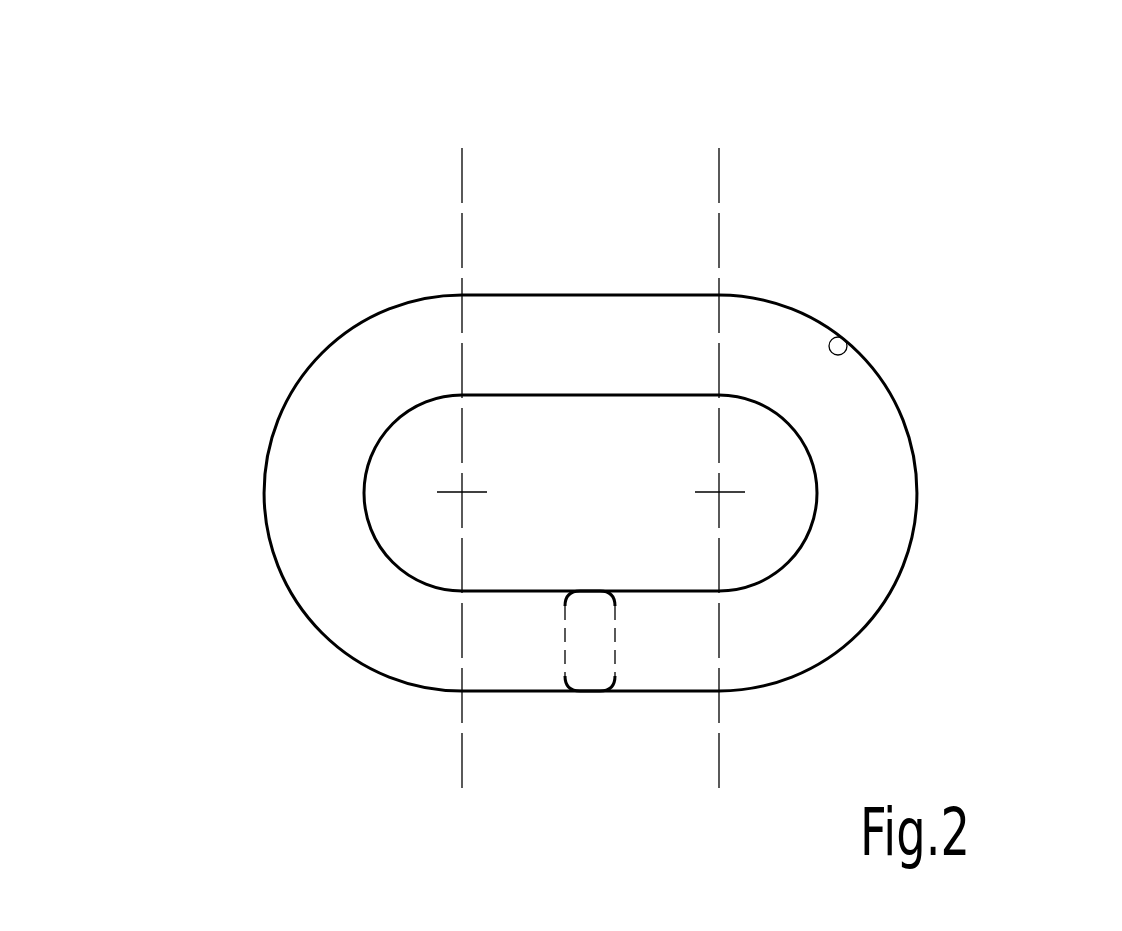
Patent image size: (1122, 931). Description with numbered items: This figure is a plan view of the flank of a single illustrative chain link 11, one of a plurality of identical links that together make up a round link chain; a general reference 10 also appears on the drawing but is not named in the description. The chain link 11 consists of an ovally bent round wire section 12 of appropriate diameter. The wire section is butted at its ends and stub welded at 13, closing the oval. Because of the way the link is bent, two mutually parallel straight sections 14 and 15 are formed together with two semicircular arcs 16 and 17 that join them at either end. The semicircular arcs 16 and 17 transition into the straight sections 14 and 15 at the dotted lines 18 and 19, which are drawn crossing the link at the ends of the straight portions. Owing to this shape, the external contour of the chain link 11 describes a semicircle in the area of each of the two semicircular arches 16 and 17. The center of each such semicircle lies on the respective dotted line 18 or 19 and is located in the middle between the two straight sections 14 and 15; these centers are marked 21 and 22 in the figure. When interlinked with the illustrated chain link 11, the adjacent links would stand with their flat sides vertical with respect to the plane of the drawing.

The chain link 10 is at (857, 193).
The chain link 11 is at (883, 443).
The round wire section 12 is at (597, 697).
The stub weld 13 is at (575, 293).
The straight section 14 is at (539, 587).
The straight section 15 is at (276, 569).
The semicircular arc 16 is at (905, 571).
The semicircular arc 17 is at (462, 187).
The dotted line 18 is at (719, 187).
The dotted line 19 is at (836, 338).
The center 21 is at (462, 492).
The center 22 is at (719, 492).